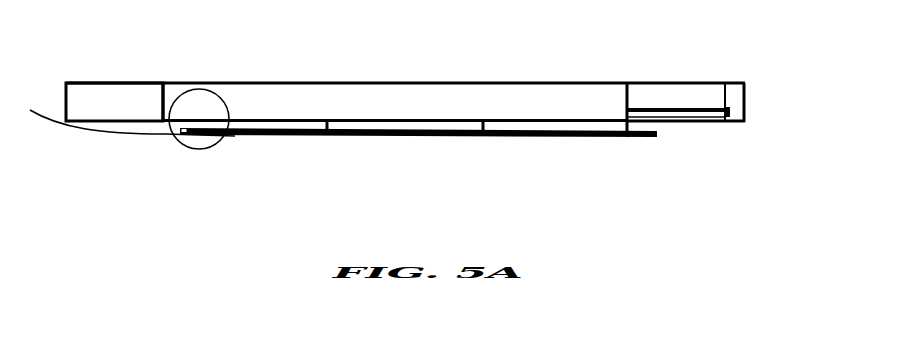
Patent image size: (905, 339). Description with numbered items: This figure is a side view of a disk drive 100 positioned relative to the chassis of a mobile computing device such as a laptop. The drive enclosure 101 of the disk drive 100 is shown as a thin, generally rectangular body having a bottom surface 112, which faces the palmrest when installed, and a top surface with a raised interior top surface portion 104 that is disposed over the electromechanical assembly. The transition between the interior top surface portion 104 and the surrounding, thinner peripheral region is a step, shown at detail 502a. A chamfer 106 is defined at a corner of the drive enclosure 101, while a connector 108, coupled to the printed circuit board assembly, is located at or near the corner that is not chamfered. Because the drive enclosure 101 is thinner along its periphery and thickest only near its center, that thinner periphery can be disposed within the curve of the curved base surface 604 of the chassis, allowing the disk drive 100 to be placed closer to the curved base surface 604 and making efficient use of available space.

The disk drive 100 is at (190, 64).
The drive enclosure 101 is at (745, 97).
The interior top surface portion 104 is at (230, 133).
The chamfers 106 is at (113, 98).
The connector 108 is at (697, 120).
The bottom surface 112 is at (530, 82).
The step 502a is at (185, 153).
The curved base surface 604 is at (35, 117).